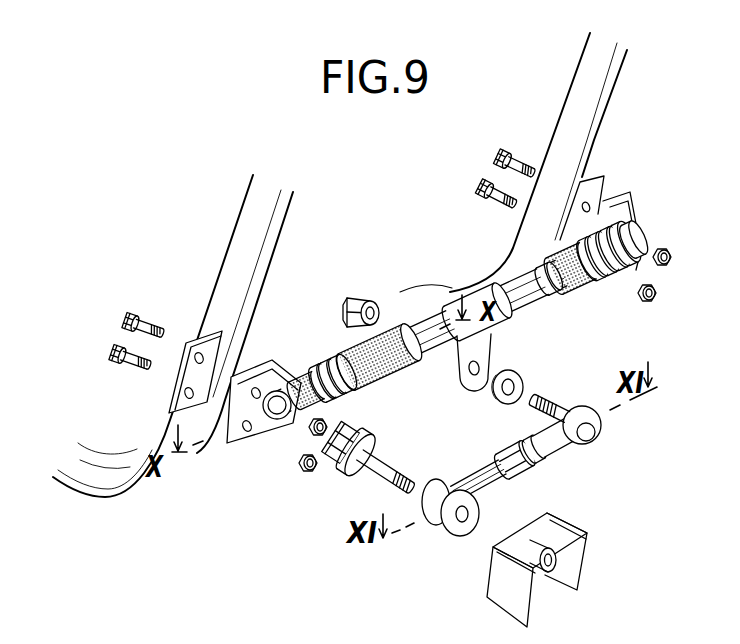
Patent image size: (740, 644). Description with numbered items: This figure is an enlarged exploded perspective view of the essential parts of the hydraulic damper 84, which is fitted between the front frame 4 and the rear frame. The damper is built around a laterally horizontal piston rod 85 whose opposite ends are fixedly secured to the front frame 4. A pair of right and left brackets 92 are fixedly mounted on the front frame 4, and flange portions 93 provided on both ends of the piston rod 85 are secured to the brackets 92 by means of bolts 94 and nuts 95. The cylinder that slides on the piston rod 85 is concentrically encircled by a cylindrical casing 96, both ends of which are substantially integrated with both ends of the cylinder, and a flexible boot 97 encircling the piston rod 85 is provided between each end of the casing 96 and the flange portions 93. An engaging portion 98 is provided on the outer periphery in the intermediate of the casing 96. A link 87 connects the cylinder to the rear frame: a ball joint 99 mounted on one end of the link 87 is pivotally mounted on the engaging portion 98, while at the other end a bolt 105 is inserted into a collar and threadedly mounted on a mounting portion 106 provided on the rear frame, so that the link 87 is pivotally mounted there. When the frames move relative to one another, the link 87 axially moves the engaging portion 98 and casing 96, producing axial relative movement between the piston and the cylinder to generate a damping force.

The front frame 4 is at (236, 232).
The hydraulic damper 84 is at (640, 357).
The piston rod 85 is at (282, 391).
The link 87 is at (486, 479).
The bracket 92 is at (189, 342).
The flange portion 93 is at (229, 443).
The bolt 94 is at (113, 349).
The nut 95 is at (302, 455).
The cylindrical casing 96 is at (428, 363).
The flexible boot 97 is at (335, 374).
The engaging portion 98 is at (468, 382).
The ball joint 99 is at (596, 408).
The bolt 105 is at (364, 440).
The mounting portion 106 is at (560, 530).